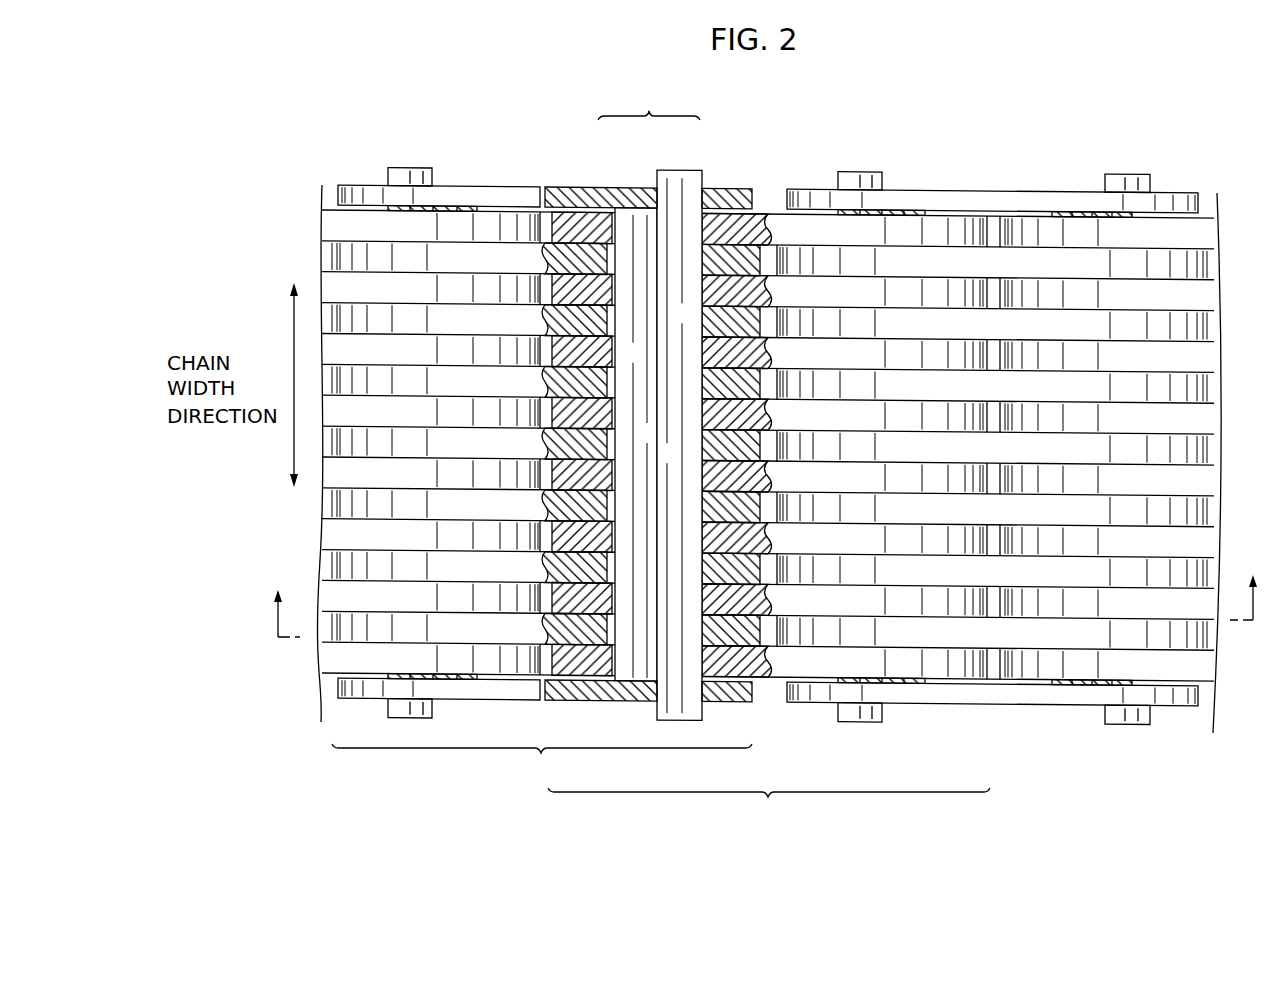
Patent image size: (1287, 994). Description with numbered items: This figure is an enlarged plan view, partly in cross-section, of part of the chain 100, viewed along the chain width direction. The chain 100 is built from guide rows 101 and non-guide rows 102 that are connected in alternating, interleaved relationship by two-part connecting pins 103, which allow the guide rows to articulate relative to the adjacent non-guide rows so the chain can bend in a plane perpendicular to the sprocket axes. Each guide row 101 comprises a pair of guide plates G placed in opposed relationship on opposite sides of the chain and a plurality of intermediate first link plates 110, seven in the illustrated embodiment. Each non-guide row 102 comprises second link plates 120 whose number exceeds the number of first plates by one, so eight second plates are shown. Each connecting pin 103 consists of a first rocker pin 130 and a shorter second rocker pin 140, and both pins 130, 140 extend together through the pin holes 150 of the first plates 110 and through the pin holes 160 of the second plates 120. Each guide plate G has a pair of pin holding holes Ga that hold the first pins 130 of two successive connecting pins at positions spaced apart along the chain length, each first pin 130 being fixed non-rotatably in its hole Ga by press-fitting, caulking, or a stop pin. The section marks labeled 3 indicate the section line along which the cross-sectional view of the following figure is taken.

The chain 100 is at (1086, 132).
The guide row 101 is at (542, 761).
The non-guide row 102 is at (769, 805).
The connecting pin 103 is at (649, 103).
The intermediate link plate 110 is at (490, 323).
The second link plate 120 is at (960, 232).
The first rocker pin 130 is at (676, 178).
The second rocker pin 140 is at (626, 210).
The pin hole 150 is at (597, 243).
The pin hole 160 is at (710, 665).
The guide plate G is at (516, 200).
The pin holding hole Ga is at (706, 183).
The section line of FIG. 3 is at (766, 594).